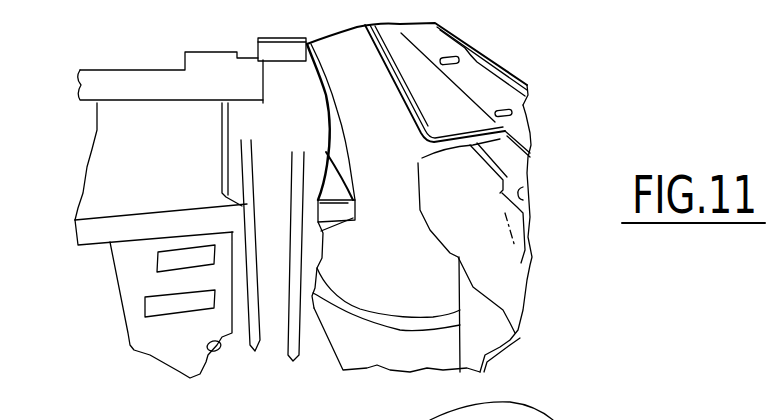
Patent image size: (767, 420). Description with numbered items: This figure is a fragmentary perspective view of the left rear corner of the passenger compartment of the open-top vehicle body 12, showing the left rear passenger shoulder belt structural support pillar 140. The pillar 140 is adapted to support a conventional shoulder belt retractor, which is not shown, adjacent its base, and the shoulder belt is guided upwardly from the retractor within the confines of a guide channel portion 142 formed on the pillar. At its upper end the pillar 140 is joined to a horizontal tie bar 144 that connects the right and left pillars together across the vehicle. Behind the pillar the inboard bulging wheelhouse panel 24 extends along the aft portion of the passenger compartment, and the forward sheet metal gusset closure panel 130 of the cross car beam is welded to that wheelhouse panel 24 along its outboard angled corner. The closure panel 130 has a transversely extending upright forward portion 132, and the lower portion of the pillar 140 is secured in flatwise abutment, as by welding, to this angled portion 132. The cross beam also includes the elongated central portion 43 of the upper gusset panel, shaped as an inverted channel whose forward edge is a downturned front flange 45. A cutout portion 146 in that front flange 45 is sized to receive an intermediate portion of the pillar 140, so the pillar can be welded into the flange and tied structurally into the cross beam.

The vehicle body 12 is at (530, 77).
The wheelhouse panel 24 is at (332, 356).
The central portion of the upper gusset panel 43 is at (85, 192).
The front flange 45 is at (100, 243).
The gusset closure panel 130 is at (124, 332).
The upright forward portion 132 is at (162, 343).
The rear passenger shoulder belt structural support pillar 140 is at (222, 135).
The guide channel portion 142 is at (258, 44).
The horizontal tie bar 144 is at (124, 80).
The cutout portion 146 is at (240, 202).